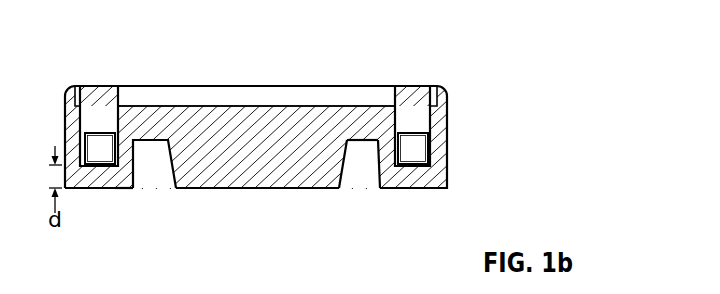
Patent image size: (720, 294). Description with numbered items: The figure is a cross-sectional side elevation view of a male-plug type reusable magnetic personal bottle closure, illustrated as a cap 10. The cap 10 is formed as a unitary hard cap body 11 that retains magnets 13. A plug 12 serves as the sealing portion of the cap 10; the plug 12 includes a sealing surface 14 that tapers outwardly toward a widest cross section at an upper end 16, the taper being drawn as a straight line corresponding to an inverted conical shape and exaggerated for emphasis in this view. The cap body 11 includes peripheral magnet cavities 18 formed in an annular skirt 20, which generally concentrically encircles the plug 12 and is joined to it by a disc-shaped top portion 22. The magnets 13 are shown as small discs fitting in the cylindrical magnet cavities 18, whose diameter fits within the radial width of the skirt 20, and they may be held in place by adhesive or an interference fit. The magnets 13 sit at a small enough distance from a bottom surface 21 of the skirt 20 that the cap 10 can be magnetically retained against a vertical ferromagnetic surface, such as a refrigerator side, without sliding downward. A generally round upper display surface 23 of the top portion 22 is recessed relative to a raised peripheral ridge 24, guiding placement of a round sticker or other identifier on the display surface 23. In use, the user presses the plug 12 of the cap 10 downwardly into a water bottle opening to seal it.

The cap 10 is at (466, 166).
The cap body 11 is at (60, 116).
The plug 12 is at (221, 194).
The magnets 13 is at (100, 132).
The sealing surface 14 is at (342, 178).
The upper end 16 is at (348, 143).
The magnet cavities 18 is at (91, 94).
The annular skirt 20 is at (97, 196).
The bottom surface 21 is at (122, 189).
The top portion 22 is at (142, 122).
The upper display surface 23 is at (243, 106).
The raised peripheral ridge 24 is at (444, 88).